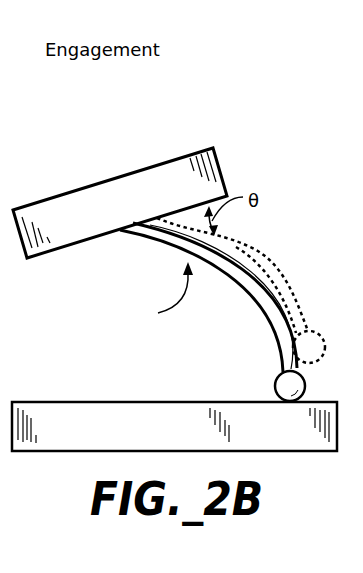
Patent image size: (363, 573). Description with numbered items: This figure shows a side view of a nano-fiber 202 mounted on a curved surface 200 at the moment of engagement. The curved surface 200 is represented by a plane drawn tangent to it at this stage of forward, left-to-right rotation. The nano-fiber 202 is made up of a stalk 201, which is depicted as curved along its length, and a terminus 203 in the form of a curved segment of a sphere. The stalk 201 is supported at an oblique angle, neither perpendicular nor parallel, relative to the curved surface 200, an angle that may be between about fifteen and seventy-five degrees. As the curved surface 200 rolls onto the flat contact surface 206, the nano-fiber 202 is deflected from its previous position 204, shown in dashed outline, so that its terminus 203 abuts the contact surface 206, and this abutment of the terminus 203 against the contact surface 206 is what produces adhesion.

The curved surface 200 is at (170, 163).
The stalk 201 is at (258, 302).
The nano-fiber 202 is at (150, 294).
The terminus 203 is at (276, 388).
The previous position 204 is at (243, 247).
The contact surface 206 is at (160, 402).